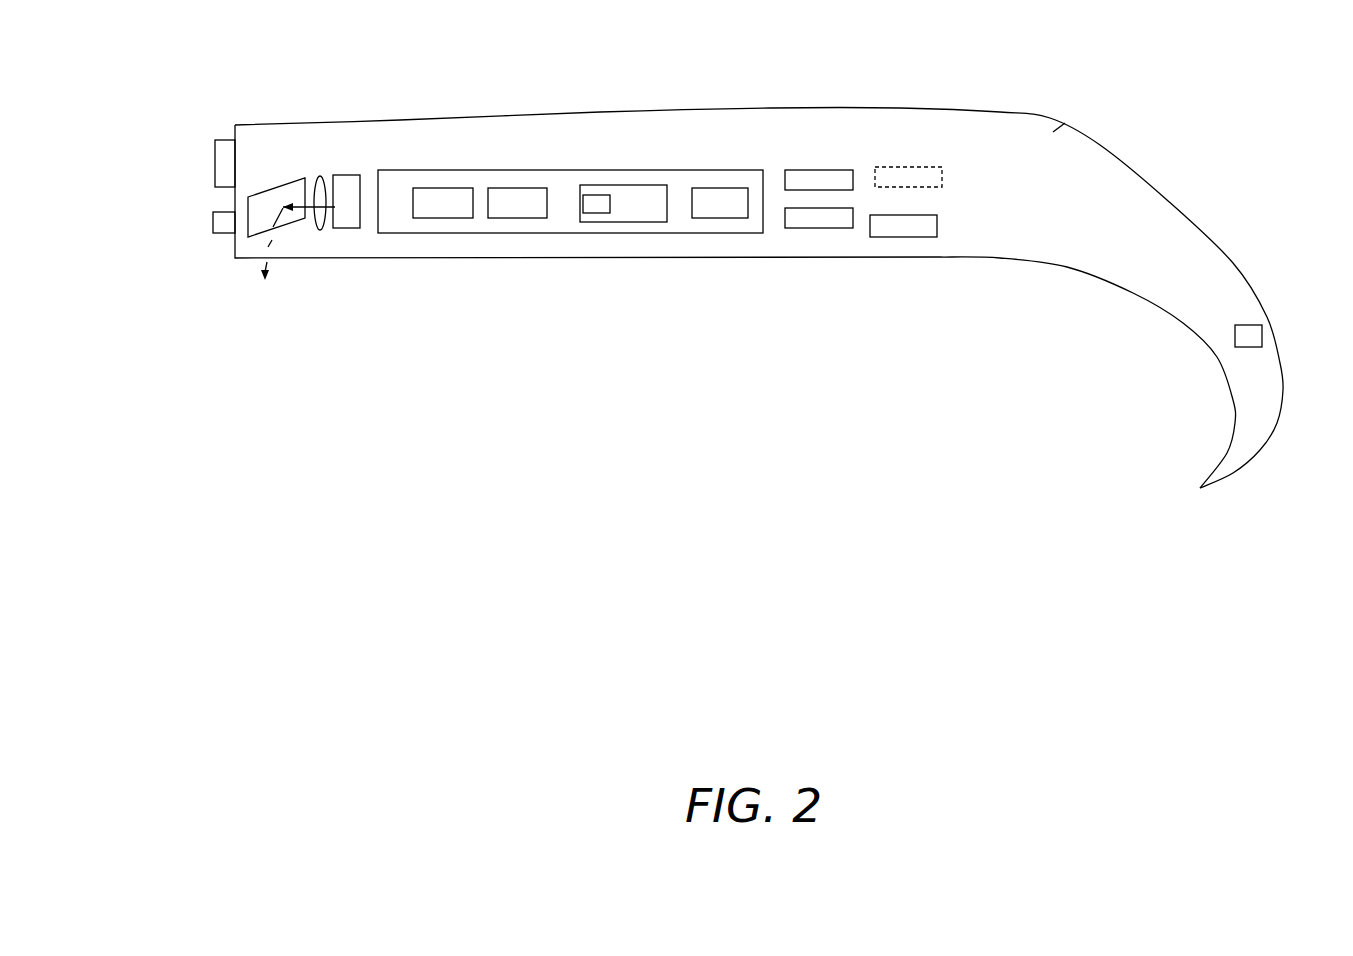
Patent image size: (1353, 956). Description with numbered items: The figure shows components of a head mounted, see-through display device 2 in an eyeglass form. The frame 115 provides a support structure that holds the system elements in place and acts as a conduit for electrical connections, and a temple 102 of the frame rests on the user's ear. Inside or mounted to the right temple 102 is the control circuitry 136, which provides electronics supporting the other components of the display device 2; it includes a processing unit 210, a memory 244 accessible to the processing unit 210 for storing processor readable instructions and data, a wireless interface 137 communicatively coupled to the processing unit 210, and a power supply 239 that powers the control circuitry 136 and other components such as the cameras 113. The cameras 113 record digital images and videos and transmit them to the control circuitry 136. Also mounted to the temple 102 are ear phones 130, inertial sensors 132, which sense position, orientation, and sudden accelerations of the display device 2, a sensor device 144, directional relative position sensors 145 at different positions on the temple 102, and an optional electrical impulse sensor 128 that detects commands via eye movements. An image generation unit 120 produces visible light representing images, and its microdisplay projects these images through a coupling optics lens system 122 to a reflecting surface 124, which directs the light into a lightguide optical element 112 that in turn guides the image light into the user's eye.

The display device 2 is at (152, 170).
The temple 102 is at (763, 130).
The frame 115 is at (655, 110).
The cameras 113 is at (217, 143).
The directional relative position sensors 145 is at (213, 224).
The reflecting surface 124 is at (280, 185).
The lightguide optical element 112 is at (251, 288).
The coupling optics lens system 122 is at (322, 177).
The image generation unit 120 is at (358, 173).
The control circuitry 136 is at (460, 172).
The processing unit 210 is at (443, 203).
The memory 244 is at (517, 203).
The wireless interface 137 is at (623, 203).
The power supply 239 is at (720, 203).
The sensor device 144 is at (822, 170).
The inertial sensors 132 is at (817, 228).
The electrical impulse sensor 128 is at (927, 185).
The ear phones 130 is at (933, 228).